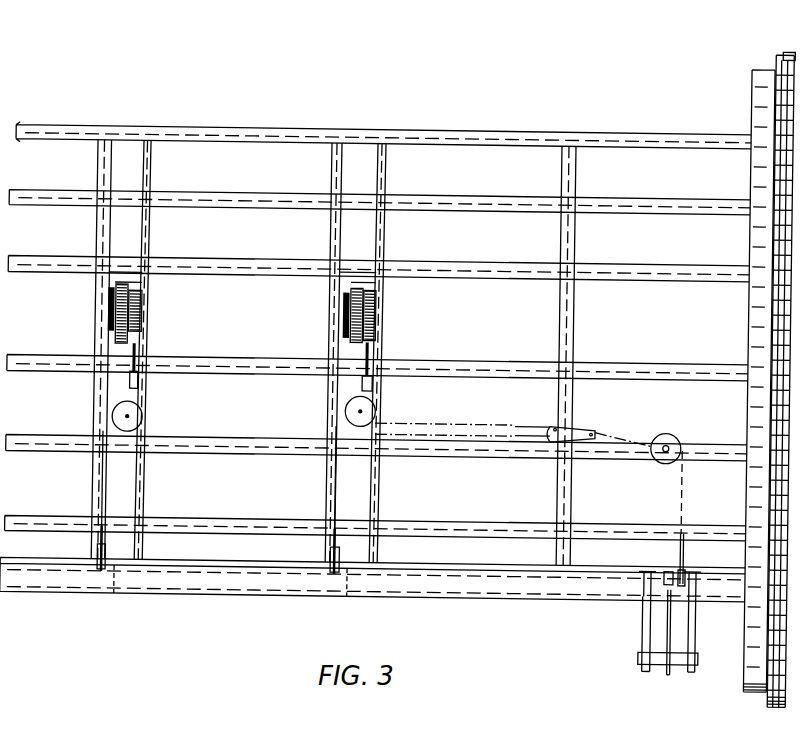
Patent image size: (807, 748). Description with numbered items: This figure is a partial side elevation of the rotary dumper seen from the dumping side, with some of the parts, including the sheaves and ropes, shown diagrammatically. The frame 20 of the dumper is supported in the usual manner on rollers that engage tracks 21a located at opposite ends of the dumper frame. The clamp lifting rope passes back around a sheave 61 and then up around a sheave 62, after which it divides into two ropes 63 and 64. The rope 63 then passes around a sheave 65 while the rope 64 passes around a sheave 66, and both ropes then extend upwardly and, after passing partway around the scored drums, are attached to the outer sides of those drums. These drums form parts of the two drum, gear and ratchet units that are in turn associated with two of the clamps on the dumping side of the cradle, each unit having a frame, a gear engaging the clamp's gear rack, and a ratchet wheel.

The frame 20 is at (680, 134).
The tracks 21a is at (778, 47).
The sheave 61 is at (687, 545).
The sheave 62 is at (678, 435).
The rope 63 is at (458, 419).
The rope 64 is at (457, 436).
The sheave 65 is at (377, 411).
The sheave 66 is at (141, 421).